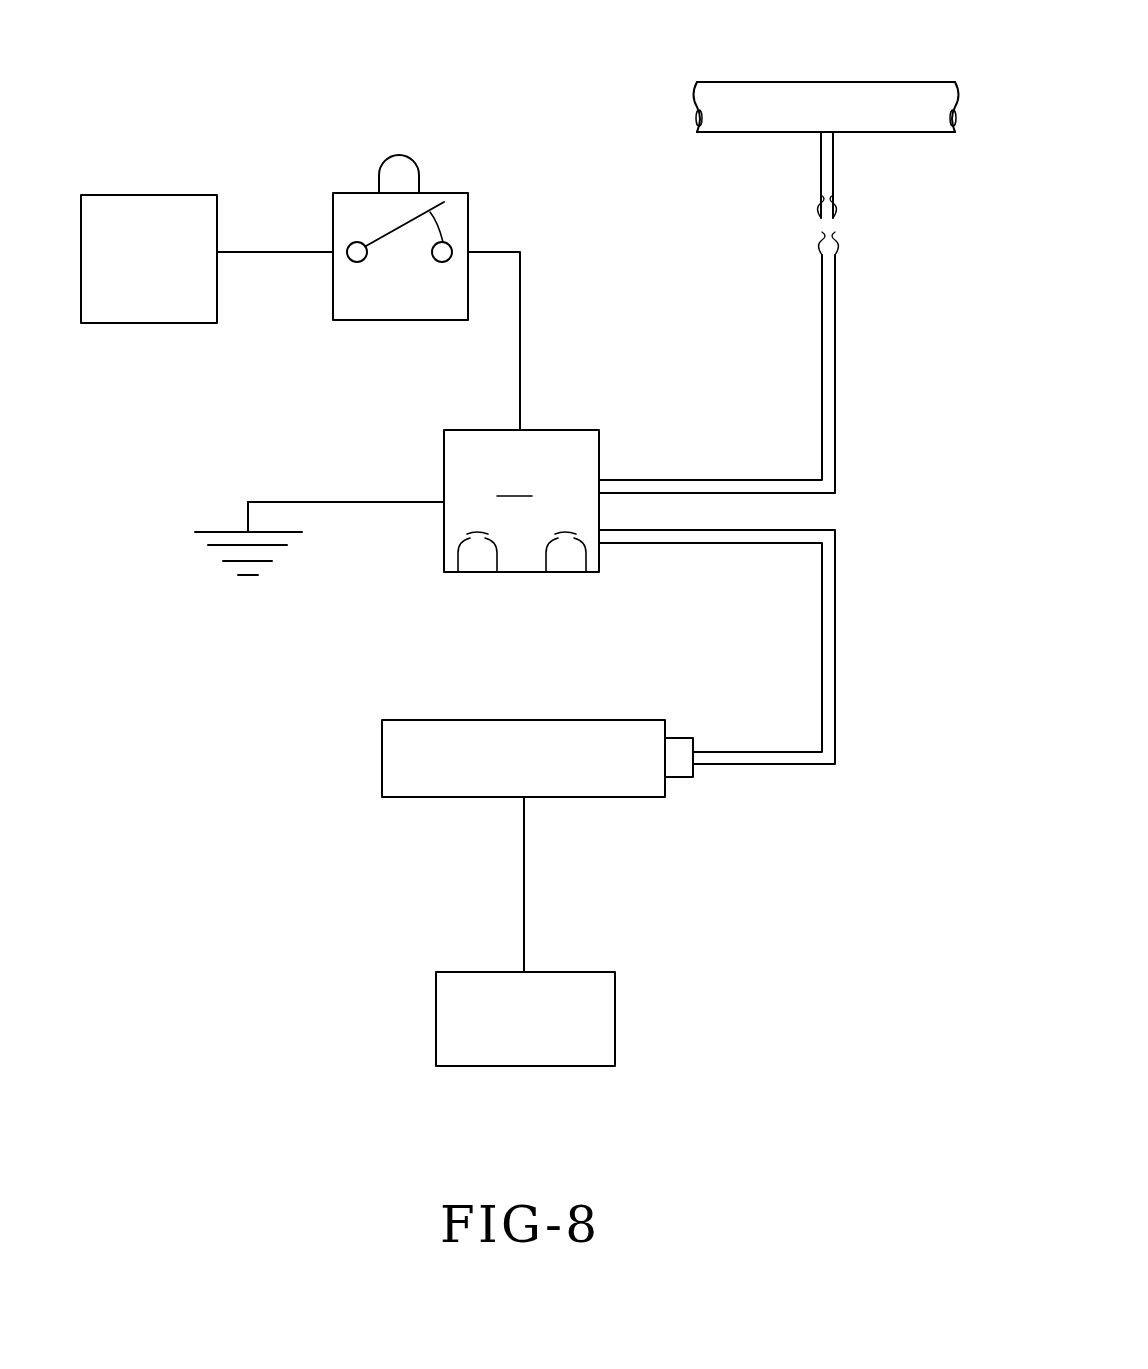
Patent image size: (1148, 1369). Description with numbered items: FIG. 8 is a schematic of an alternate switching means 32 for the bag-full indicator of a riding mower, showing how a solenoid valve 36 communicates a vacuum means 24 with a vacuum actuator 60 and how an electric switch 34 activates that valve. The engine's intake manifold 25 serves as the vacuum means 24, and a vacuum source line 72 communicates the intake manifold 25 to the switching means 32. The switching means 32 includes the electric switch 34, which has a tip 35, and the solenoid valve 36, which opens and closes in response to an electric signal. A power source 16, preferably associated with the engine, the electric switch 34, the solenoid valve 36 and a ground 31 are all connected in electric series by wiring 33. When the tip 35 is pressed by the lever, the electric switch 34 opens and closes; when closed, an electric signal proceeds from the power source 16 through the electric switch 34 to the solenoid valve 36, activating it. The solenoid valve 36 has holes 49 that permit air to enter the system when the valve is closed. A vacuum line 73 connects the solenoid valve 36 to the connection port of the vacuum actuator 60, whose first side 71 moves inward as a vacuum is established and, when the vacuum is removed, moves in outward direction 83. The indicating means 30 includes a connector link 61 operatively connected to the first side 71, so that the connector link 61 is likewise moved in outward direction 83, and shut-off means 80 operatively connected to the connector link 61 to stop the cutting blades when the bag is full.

The power source 16 is at (137, 202).
The vacuum means 24 is at (832, 71).
The intake manifold 25 is at (857, 115).
The indicating means 30 is at (378, 915).
The ground 31 is at (195, 532).
The switching means 32 is at (260, 374).
The wiring 33 is at (252, 253).
The electric switch 34 is at (385, 307).
The tip 35 is at (400, 162).
The solenoid valve 36 is at (521, 501).
The holes 49 is at (473, 572).
The vacuum actuator 60 is at (397, 760).
The connector link 61 is at (524, 910).
The first side 71 is at (483, 797).
The vacuum source line 72 is at (827, 420).
The vacuum line 73 is at (829, 638).
The shut-off means 80 is at (600, 1021).
The outward direction 83 is at (613, 873).